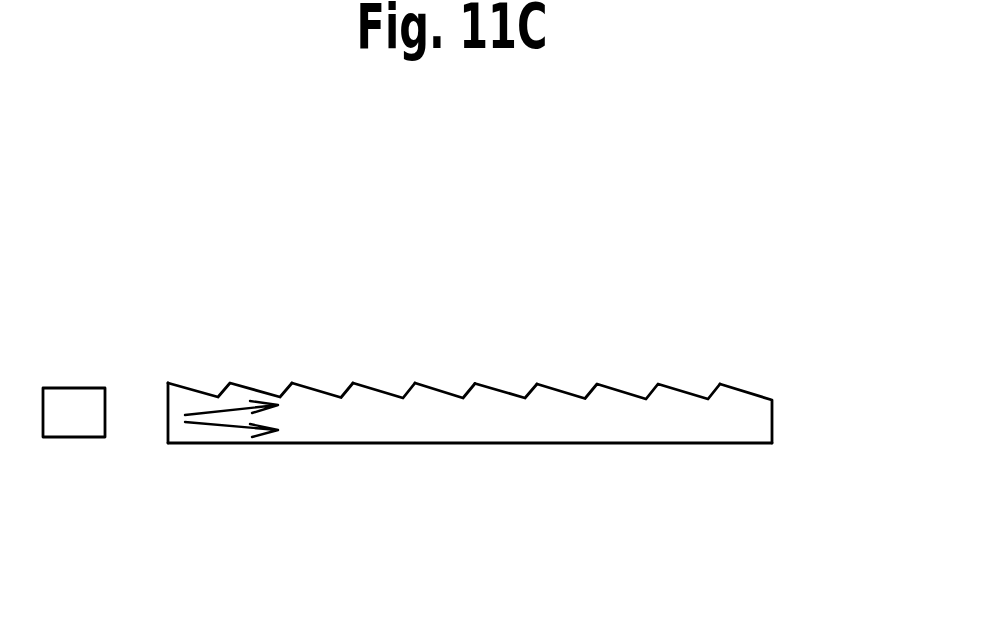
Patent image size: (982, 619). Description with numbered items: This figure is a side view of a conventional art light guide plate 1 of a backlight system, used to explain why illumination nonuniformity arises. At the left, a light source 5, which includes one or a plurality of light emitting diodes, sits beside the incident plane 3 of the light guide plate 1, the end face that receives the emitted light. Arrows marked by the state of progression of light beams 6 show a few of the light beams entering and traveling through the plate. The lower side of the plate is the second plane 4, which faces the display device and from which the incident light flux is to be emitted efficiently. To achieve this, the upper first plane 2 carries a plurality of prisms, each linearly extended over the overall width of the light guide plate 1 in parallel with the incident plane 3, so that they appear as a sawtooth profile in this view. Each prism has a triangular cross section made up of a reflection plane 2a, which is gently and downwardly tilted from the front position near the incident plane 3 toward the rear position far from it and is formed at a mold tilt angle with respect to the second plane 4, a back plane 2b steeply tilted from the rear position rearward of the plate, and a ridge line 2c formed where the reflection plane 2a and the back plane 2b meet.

The light guide plate 1 is at (480, 422).
The first plane 2 is at (471, 344).
The reflection plane 2a is at (321, 388).
The back plane 2b is at (406, 388).
The ridge line 2c is at (534, 388).
The incident plane 3 is at (167, 430).
The second plane 4 is at (610, 443).
The light source 5 is at (73, 400).
The state of progression of light beams 6 is at (240, 428).